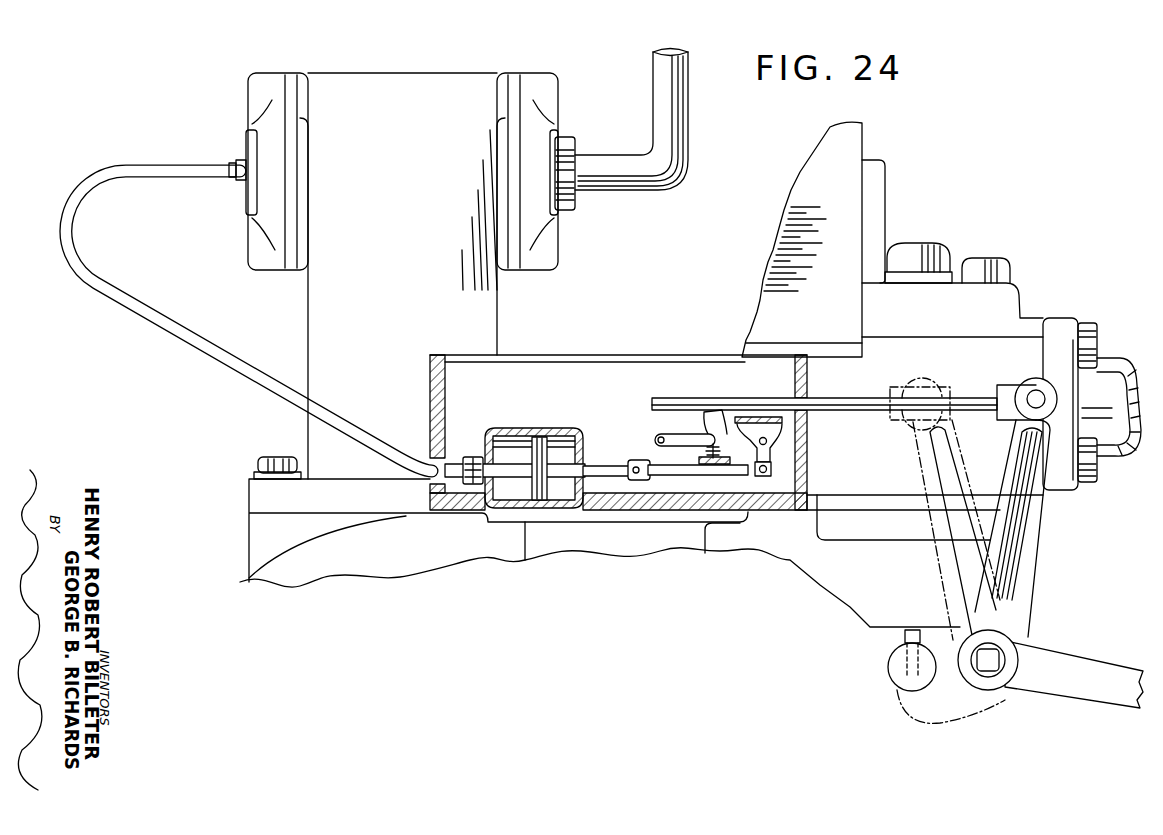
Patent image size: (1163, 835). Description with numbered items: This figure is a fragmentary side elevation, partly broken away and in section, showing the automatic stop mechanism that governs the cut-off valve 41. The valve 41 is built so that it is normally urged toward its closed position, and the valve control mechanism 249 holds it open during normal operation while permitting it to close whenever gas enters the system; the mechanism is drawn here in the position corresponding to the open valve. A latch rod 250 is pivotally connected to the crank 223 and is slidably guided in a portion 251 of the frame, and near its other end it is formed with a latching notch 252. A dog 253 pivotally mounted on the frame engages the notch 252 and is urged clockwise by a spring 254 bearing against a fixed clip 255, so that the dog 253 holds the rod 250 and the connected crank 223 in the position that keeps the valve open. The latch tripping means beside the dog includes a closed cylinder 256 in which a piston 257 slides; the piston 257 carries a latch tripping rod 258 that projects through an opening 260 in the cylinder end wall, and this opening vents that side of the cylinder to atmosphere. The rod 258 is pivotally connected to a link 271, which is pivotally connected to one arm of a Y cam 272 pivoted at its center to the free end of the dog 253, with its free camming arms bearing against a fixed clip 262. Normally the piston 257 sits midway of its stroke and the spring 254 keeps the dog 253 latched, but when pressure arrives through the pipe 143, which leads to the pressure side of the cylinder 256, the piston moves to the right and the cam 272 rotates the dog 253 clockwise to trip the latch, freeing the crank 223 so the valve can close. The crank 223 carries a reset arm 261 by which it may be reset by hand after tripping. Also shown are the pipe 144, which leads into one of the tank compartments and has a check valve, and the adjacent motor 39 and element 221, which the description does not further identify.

The motor 39 is at (431, 88).
The cut-off valve 41 is at (998, 318).
The pipe 143 is at (350, 435).
The pipe 144 is at (676, 186).
The bolt 221 is at (905, 638).
The crank 223 is at (1023, 544).
The valve control mechanism 249 is at (648, 432).
The latch rod 250 is at (858, 402).
The portion of the frame 251 is at (810, 379).
The latching notch 252 is at (712, 405).
The dog 253 is at (678, 437).
The spring 254 is at (705, 452).
The fixed clip 255 is at (698, 481).
The closed cylinder 256 is at (516, 428).
The piston 257 is at (547, 413).
The latch tripping rod 258 is at (616, 480).
The opening 260 is at (591, 465).
The reset arm 261 is at (1092, 677).
The fixed clip 262 is at (782, 428).
The link 271 is at (680, 480).
The Y cam 272 is at (766, 455).